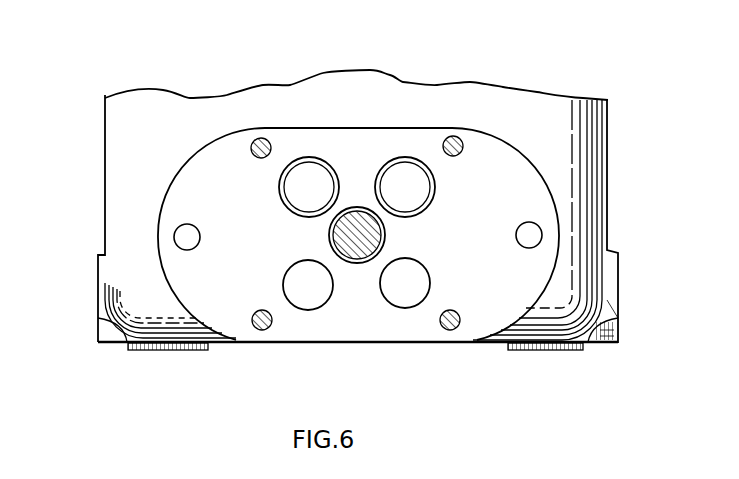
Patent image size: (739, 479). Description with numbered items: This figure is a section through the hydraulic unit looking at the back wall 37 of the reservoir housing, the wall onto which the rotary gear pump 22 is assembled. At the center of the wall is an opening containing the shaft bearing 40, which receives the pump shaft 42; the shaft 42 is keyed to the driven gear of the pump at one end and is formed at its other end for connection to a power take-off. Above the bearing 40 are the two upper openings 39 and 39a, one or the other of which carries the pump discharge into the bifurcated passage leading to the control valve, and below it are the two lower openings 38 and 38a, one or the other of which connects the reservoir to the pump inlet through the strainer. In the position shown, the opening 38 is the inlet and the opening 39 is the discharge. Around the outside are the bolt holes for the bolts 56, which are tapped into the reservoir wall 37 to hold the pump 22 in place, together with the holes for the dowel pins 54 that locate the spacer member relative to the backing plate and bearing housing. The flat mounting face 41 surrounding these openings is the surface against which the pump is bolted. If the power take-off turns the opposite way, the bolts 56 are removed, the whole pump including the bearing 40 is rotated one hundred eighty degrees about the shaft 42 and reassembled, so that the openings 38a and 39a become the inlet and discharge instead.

The rotary gear pump 22 is at (366, 96).
The back wall 37 is at (117, 188).
The housing opening 38 is at (423, 292).
The housing opening 38a is at (328, 292).
The housing opening 39 is at (382, 185).
The housing opening 39a is at (292, 183).
The shaft bearing 40 is at (334, 222).
The mounting face 41 is at (492, 318).
The pump shaft 42 is at (357, 256).
The dowel pin 54 is at (180, 238).
The bolt 56 is at (260, 138).